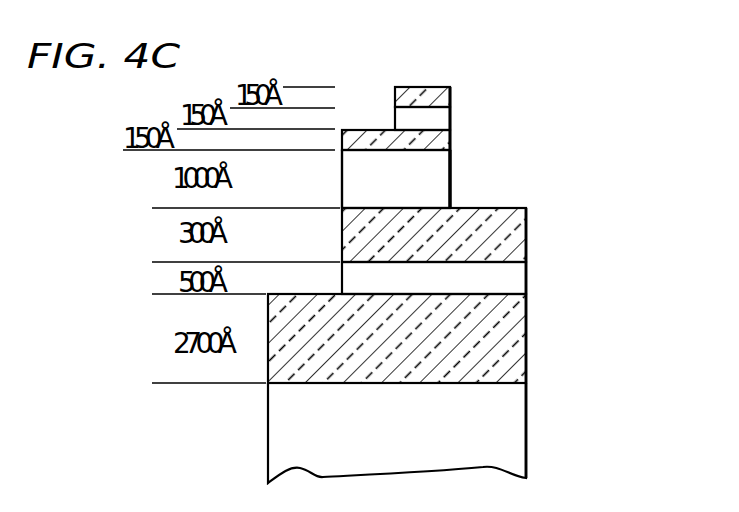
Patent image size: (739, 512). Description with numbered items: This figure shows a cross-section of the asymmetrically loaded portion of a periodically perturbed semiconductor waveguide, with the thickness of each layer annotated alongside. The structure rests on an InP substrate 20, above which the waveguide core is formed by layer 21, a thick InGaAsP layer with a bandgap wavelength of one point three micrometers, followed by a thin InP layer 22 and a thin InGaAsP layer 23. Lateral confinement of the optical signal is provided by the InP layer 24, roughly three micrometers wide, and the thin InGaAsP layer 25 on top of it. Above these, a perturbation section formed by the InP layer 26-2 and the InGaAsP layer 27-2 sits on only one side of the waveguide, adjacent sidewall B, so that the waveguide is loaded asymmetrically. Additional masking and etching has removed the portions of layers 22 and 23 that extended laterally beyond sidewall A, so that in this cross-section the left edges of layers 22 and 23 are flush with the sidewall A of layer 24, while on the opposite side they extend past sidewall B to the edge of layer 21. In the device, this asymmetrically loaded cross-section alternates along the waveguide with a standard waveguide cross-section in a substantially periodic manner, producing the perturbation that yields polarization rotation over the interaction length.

The InP substrate 20 is at (525, 424).
The waveguide core layer 21 is at (527, 345).
The InP core layer 22 is at (527, 272).
The InGaAsP core layer 23 is at (527, 224).
The InP lateral confinement layer 24 is at (447, 161).
The InGaAsP lateral confinement layer 25 is at (450, 134).
The InP perturbation layer 26-2 is at (450, 109).
The InGaAsP perturbation layer 27-2 is at (450, 86).
The sidewall A is at (341, 190).
The sidewall B is at (452, 197).